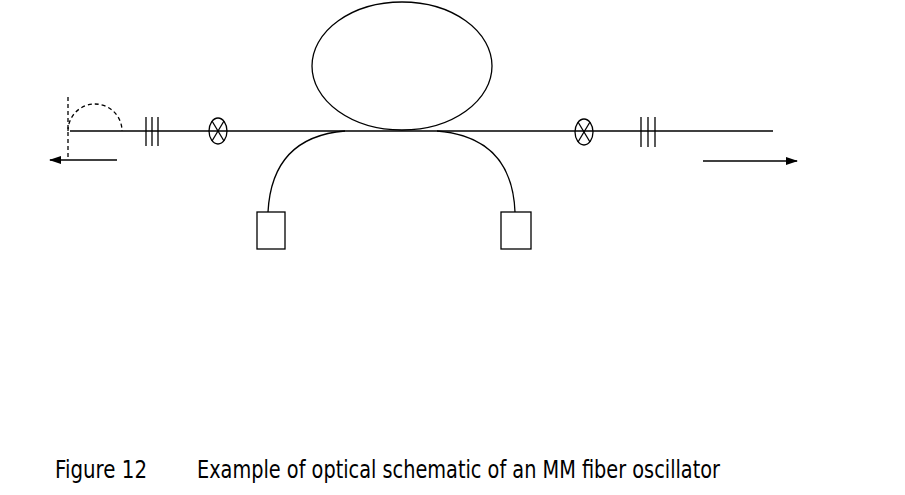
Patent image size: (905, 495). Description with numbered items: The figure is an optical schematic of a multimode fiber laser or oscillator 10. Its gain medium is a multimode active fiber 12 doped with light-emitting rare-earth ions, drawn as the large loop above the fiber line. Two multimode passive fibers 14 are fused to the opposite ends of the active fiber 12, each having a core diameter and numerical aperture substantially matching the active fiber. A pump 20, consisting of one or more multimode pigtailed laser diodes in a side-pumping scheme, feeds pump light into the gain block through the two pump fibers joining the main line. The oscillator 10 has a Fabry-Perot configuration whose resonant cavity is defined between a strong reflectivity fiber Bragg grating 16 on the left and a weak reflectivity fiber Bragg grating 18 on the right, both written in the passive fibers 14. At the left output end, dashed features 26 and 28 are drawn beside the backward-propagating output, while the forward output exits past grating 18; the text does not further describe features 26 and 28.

The multimode fiber laser or oscillator 10 is at (210, 68).
The MM fiber 12 is at (400, 38).
The MM passive fibers 14 is at (612, 171).
The strong reflectivity MM fiber Bragg grating 16 is at (155, 178).
The weak reflectivity MM fiber Bragg grating 18 is at (668, 184).
The pump 20 is at (496, 233).
The output end facet 26 is at (68, 124).
The output beam 28 is at (103, 118).